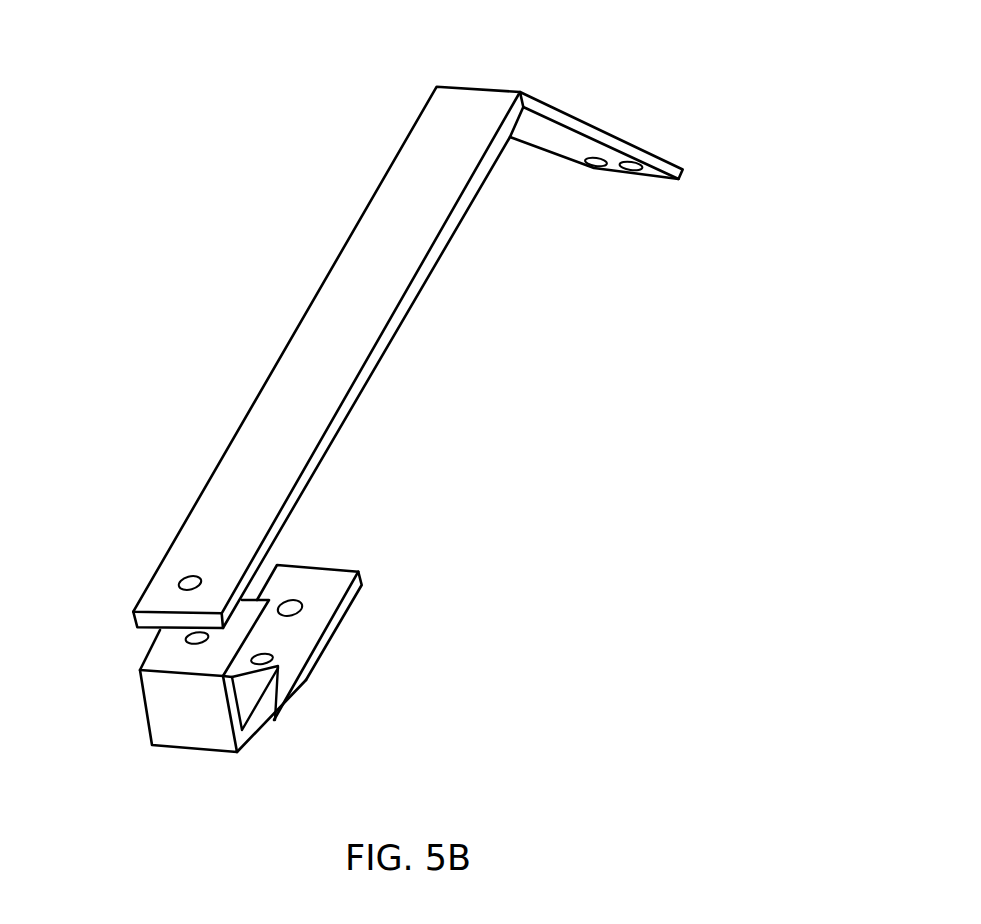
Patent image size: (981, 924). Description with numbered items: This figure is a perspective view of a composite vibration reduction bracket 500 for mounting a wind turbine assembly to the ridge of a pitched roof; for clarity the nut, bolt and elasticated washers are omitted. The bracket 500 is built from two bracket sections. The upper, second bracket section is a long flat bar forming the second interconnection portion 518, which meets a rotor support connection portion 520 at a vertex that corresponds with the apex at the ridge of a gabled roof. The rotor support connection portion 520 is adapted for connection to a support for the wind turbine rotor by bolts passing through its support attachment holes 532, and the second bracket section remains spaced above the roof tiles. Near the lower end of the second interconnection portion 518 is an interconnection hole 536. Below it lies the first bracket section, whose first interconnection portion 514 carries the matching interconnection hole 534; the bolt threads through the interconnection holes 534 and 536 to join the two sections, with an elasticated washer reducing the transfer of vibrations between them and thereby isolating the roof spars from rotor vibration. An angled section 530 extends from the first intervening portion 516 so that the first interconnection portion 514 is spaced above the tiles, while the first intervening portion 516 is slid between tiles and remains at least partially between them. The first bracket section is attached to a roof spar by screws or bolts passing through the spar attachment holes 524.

The composite vibration reduction bracket 500 is at (196, 137).
The second interconnection portion 518 is at (408, 163).
The rotor support connection portion 520 is at (583, 118).
The support attachment holes 532 is at (597, 167).
The interconnection hole 536 is at (178, 583).
The interconnection hole 534 is at (185, 639).
The first interconnection portion 514 is at (167, 655).
The angled section 530 is at (168, 712).
The first intervening portion 516 is at (247, 703).
The spar attachment holes 524 is at (271, 658).